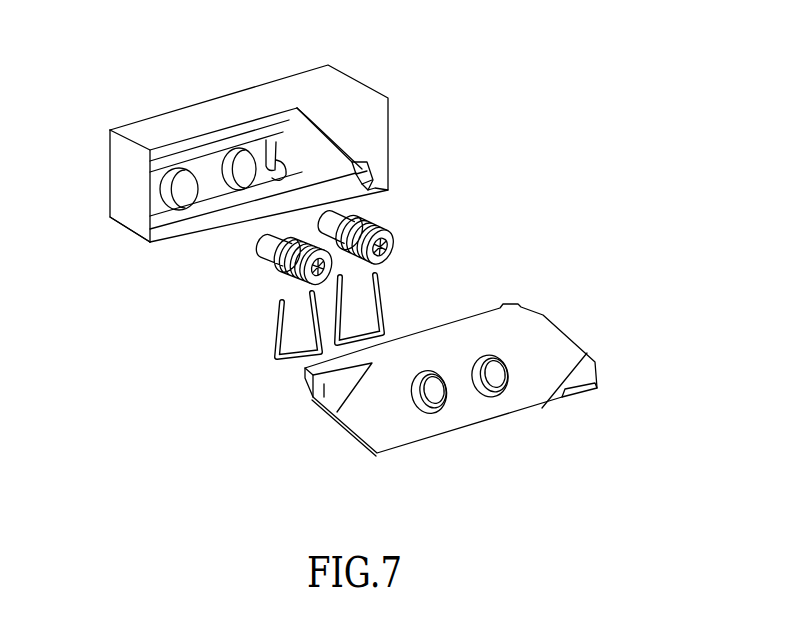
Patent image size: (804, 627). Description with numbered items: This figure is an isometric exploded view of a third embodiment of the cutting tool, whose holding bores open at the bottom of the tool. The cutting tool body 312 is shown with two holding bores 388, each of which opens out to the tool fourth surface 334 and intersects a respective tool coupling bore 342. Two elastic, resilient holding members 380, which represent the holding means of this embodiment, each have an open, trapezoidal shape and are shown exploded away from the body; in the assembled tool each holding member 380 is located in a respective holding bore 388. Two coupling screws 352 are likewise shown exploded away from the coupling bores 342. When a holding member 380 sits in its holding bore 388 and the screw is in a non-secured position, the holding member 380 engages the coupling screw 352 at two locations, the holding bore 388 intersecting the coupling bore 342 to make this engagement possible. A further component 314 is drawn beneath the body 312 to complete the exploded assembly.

The cutting tool body 312 is at (166, 96).
The clamp block 314 is at (532, 368).
The tool fourth surface 334 is at (138, 233).
The tool coupling bore 342 is at (219, 158).
The coupling screw 352 is at (388, 222).
The holding member 380 is at (252, 348).
The holding bore 388 is at (270, 142).